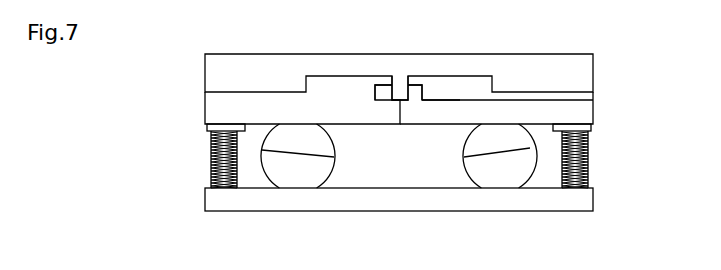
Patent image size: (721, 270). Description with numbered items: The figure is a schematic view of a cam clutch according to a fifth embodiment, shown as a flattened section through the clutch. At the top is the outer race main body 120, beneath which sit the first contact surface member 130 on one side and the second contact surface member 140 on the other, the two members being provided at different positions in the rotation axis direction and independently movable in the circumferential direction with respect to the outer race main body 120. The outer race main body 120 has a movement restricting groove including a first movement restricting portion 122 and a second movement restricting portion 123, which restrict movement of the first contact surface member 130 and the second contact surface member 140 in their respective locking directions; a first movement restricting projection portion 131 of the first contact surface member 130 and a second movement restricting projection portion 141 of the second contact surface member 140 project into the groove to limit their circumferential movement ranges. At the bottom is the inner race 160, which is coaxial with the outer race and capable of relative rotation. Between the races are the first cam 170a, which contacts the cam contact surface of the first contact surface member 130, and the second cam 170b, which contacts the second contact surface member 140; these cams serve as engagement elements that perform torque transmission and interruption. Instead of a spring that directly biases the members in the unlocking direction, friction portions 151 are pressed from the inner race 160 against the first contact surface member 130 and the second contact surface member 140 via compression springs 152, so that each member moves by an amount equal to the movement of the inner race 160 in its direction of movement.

The outer race main body 120 is at (250, 62).
The first movement restricting portion 122 is at (392, 88).
The second movement restricting portion 123 is at (412, 84).
The first contact surface member 130 is at (250, 108).
The first movement restricting projection portion 131 is at (375, 88).
The second contact surface member 140 is at (572, 108).
The second movement restricting projection portion 141 is at (440, 96).
The friction portion 151 is at (207, 128).
The compression spring 152 is at (213, 160).
The inner race 160 is at (250, 198).
The first cam 170a is at (300, 165).
The second cam 170b is at (507, 163).